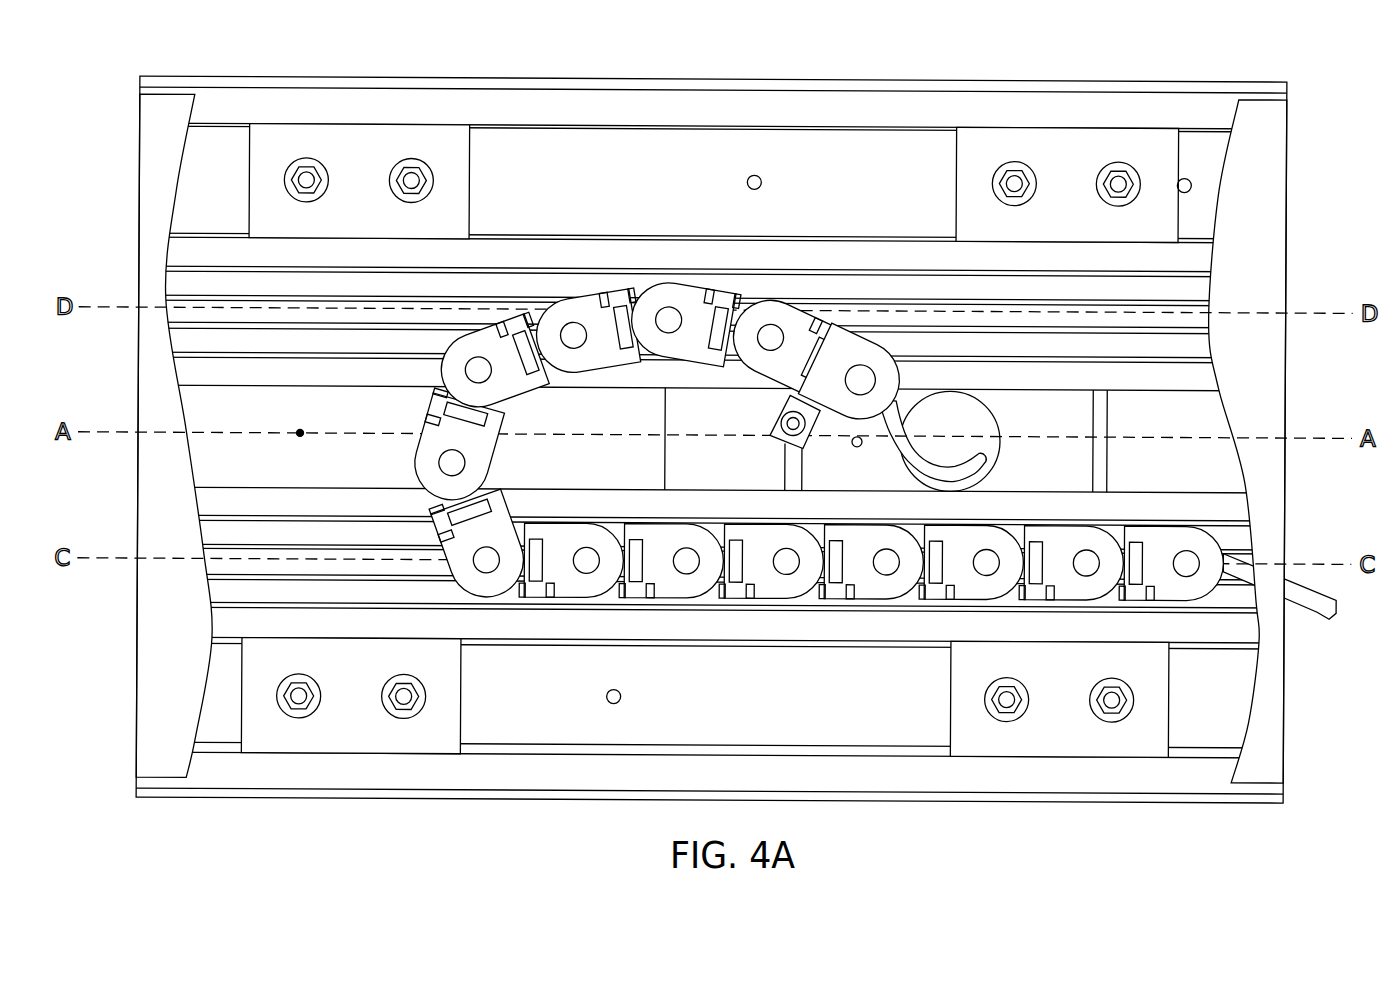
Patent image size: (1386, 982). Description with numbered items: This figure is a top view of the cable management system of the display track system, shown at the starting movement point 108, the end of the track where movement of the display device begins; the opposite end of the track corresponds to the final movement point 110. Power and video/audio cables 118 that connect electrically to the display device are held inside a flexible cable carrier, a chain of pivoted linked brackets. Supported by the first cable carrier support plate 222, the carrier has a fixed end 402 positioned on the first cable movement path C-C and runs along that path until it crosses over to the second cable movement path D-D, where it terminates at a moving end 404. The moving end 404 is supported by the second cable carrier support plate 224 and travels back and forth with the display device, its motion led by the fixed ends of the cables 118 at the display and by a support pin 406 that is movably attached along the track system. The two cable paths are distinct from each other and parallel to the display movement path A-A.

The starting movement point 108 is at (986, 426).
The final movement point 110 is at (300, 432).
The cables 118 is at (918, 457).
The first cable carrier support plate 222 is at (220, 499).
The second cable carrier support plate 224 is at (1060, 480).
The fixed end 402 is at (1180, 534).
The moving end 404 is at (848, 406).
The support pin 406 is at (782, 421).